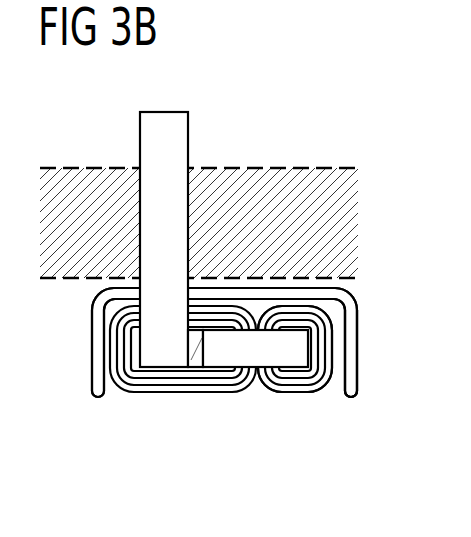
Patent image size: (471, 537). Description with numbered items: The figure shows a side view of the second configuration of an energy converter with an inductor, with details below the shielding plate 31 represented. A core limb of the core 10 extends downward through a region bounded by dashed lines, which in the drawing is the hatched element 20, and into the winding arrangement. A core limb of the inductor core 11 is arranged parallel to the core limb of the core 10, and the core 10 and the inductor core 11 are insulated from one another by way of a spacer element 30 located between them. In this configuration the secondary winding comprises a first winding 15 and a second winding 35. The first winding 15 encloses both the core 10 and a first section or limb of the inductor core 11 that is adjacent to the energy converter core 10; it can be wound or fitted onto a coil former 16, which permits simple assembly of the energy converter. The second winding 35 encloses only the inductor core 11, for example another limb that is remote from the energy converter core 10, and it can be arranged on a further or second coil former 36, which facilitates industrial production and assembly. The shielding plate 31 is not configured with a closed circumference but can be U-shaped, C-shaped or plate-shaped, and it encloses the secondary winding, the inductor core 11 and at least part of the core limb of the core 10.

The core 10 is at (163, 118).
The inductor core 11 is at (252, 358).
The housing wall 20 is at (279, 172).
The spacer element 30 is at (197, 362).
The first winding 15 is at (224, 392).
The coil former 16 is at (153, 393).
The second winding 35 is at (295, 401).
The second coil former 36 is at (297, 393).
The shielding plate 31 is at (352, 394).